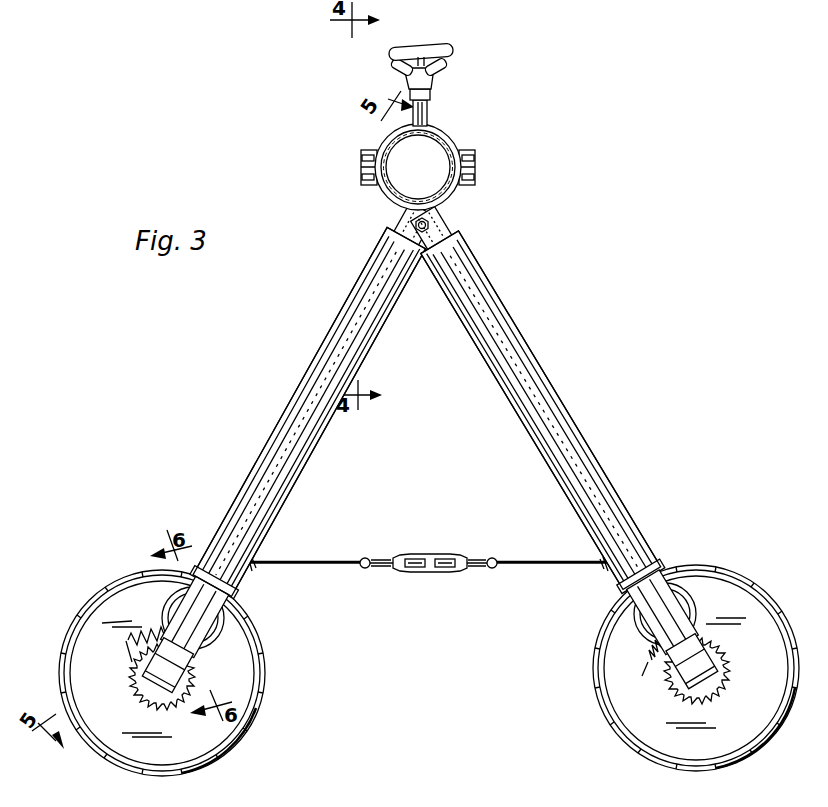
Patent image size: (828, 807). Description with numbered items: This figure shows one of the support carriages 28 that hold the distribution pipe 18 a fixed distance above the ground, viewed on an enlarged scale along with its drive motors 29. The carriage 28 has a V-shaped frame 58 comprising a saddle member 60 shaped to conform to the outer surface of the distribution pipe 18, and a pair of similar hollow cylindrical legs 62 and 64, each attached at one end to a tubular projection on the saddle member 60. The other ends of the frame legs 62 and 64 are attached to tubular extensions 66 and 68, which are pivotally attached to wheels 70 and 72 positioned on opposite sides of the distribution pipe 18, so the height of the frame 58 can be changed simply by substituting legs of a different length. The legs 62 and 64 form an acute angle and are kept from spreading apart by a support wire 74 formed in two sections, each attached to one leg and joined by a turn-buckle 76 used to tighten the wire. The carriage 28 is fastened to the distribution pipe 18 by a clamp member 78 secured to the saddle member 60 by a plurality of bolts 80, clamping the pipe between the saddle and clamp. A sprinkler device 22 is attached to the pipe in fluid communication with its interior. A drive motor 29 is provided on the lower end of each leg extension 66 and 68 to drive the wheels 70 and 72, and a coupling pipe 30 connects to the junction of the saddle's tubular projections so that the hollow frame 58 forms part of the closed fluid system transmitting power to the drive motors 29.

The distribution pipe 18 is at (447, 150).
The sprinkler device 22 is at (432, 84).
The support carriage 28 is at (266, 348).
The drive motor 29 is at (232, 644).
The coupling pipe 30 is at (431, 224).
The V-shaped frame 58 is at (490, 274).
The saddle member 60 is at (386, 196).
The frame leg 62 is at (582, 443).
The frame leg 64 is at (294, 468).
The tubular extension 66 is at (655, 588).
The tubular extension 68 is at (205, 614).
The wheel 70 is at (733, 598).
The wheel 72 is at (124, 600).
The support wire 74 is at (340, 562).
The turn-buckle 76 is at (434, 557).
The clamp member 78 is at (448, 149).
The bolts 80 is at (367, 158).